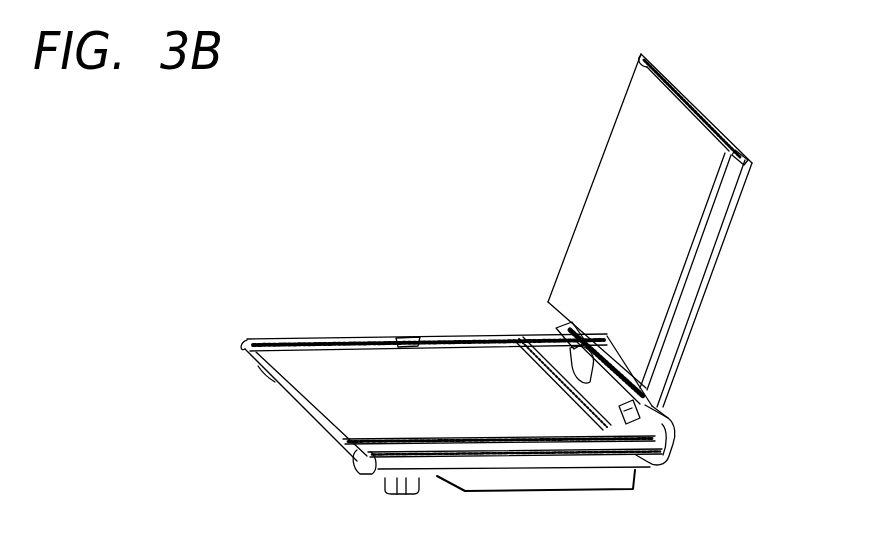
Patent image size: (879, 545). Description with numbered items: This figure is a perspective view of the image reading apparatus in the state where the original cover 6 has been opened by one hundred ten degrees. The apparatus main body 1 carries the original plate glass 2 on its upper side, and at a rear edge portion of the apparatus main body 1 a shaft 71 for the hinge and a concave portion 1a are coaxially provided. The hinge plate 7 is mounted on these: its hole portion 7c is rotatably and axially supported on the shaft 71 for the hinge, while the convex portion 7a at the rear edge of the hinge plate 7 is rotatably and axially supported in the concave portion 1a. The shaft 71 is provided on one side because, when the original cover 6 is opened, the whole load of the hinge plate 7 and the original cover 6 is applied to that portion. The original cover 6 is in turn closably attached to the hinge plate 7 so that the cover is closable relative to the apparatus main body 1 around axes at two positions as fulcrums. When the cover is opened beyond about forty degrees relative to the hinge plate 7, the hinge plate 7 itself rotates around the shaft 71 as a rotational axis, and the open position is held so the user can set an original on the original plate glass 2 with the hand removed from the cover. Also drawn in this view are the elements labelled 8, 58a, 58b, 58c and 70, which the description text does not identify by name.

The apparatus main body 1 is at (467, 465).
The concave portion 1a is at (563, 345).
The original plate glass 2 is at (378, 383).
The original cover 6 is at (667, 68).
The hinge plate 7 is at (668, 416).
The convex portion 7a is at (553, 350).
The hole portion 7c is at (589, 418).
The upper casing (lid) 8 is at (623, 165).
The tray guide rail (right) 58a is at (508, 336).
The tray guide rail (rear) 58b is at (408, 338).
The tray guide rail (left) 58c is at (262, 375).
The hinge cover 70 is at (655, 450).
The shaft for the hinge 71 is at (566, 411).